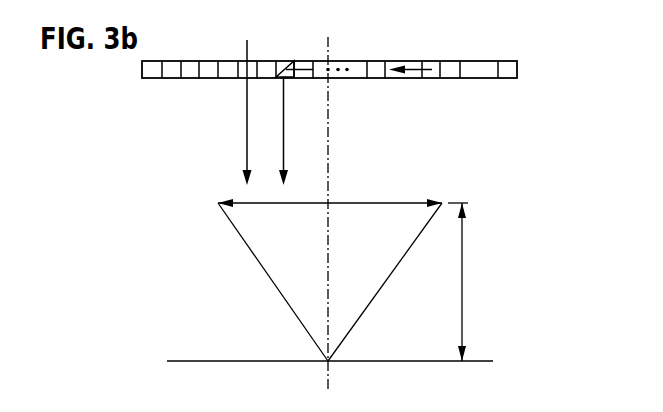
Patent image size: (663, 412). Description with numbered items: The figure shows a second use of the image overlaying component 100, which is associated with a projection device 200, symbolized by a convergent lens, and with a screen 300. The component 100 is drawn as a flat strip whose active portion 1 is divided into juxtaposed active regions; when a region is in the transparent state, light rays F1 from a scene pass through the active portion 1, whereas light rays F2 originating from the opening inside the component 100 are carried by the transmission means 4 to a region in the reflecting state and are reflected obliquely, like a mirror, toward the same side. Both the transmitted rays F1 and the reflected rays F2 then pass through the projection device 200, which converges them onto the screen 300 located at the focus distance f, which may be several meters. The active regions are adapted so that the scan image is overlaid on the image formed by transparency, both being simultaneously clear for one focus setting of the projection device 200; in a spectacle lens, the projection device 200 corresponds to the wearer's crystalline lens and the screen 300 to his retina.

The component 100 is at (461, 35).
The active portion 1 is at (429, 61).
The transmission means 4 is at (500, 61).
The projection device 200 is at (405, 203).
The screen 300 is at (480, 352).
The light rays F1 is at (246, 46).
The light rays F2 is at (284, 130).
The focus distance f is at (460, 282).